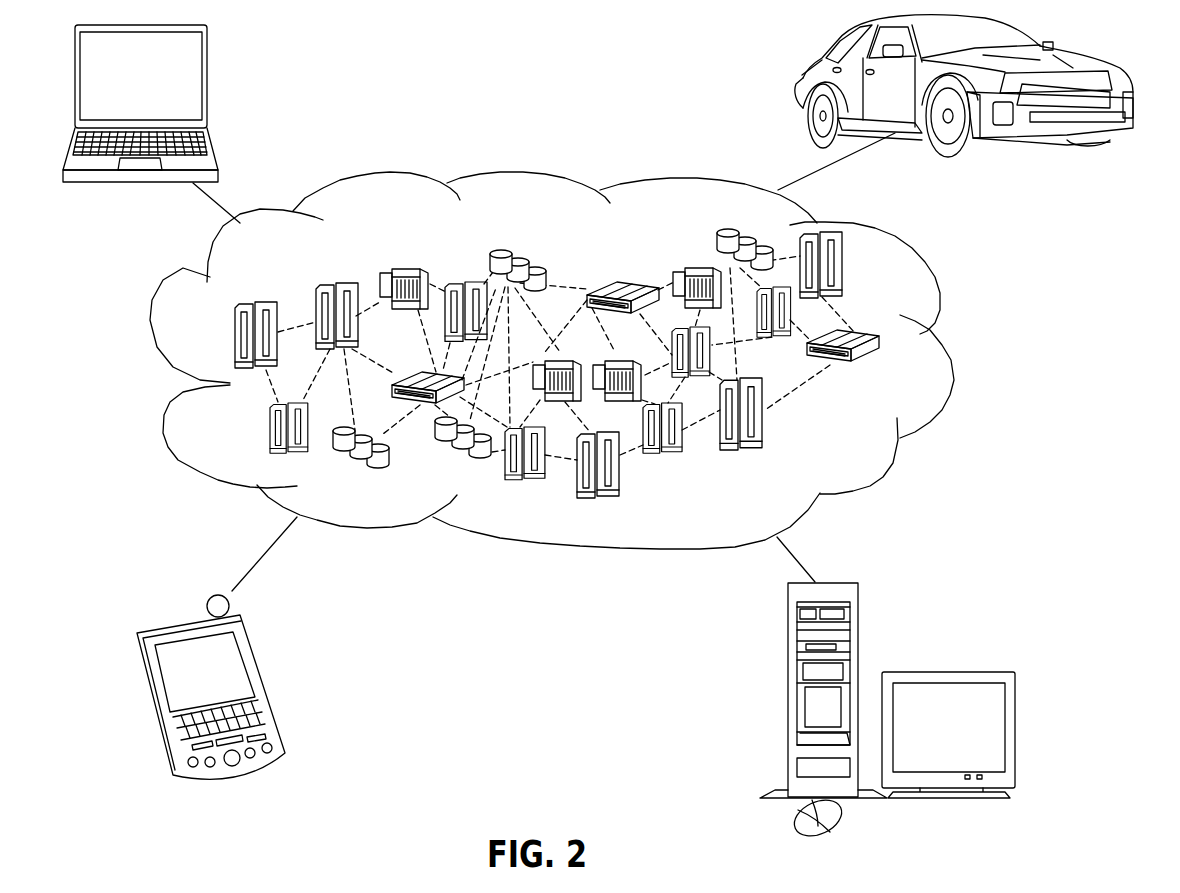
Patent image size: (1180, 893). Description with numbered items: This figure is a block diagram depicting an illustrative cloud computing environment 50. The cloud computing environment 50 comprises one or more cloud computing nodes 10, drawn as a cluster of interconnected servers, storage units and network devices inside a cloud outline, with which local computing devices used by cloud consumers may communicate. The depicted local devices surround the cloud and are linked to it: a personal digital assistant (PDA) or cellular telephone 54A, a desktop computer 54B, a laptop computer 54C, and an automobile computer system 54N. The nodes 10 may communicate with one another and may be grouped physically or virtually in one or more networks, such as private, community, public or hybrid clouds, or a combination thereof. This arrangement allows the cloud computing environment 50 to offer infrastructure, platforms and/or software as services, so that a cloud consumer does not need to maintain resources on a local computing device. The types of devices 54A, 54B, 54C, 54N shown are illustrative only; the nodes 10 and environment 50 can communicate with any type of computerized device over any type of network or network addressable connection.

The cloud computing nodes 10 is at (858, 443).
The cloud computing environment 50 is at (947, 347).
The personal digital assistant (PDA) or cellular telephone 54A is at (257, 652).
The desktop computer 54B is at (788, 640).
The laptop computer 54C is at (207, 61).
The automobile computer system 54N is at (800, 80).